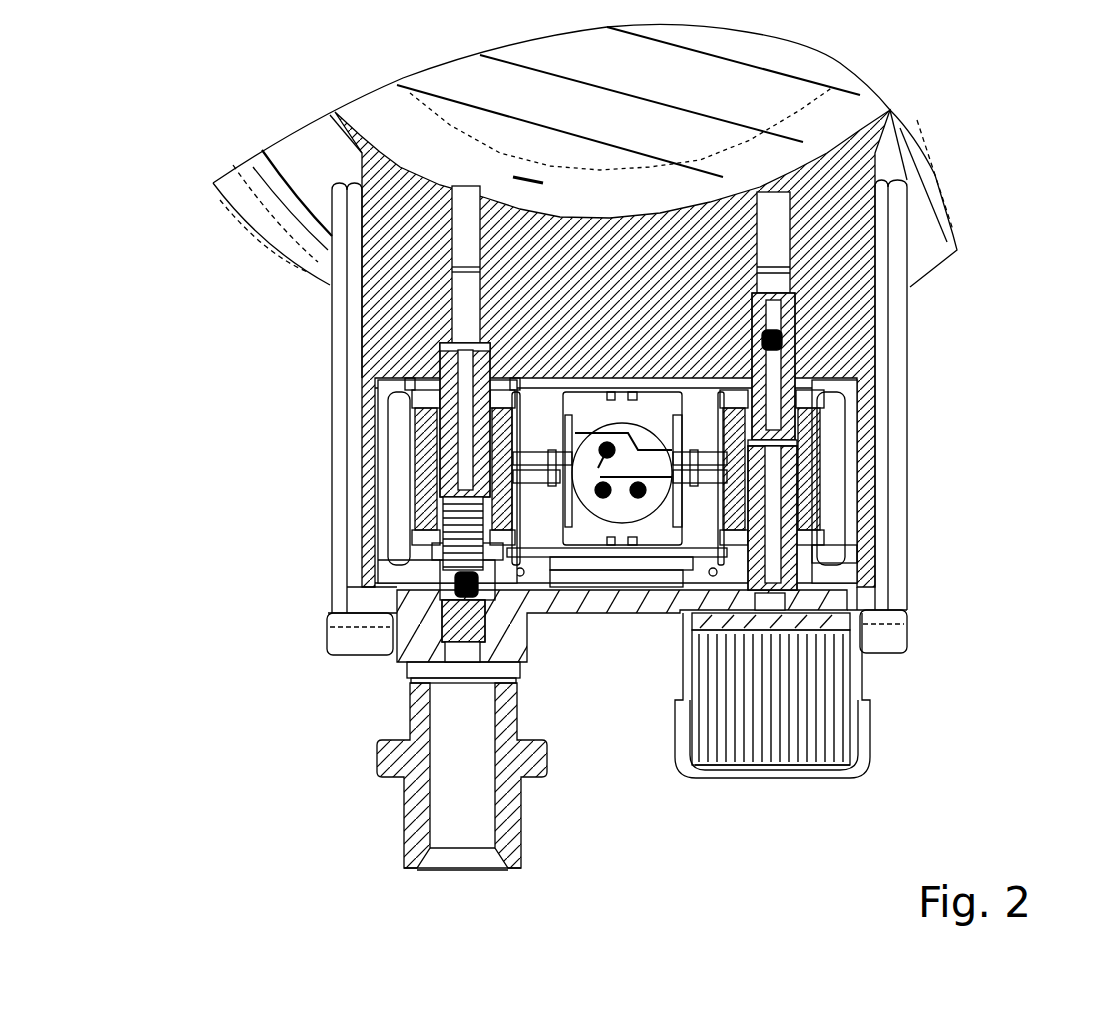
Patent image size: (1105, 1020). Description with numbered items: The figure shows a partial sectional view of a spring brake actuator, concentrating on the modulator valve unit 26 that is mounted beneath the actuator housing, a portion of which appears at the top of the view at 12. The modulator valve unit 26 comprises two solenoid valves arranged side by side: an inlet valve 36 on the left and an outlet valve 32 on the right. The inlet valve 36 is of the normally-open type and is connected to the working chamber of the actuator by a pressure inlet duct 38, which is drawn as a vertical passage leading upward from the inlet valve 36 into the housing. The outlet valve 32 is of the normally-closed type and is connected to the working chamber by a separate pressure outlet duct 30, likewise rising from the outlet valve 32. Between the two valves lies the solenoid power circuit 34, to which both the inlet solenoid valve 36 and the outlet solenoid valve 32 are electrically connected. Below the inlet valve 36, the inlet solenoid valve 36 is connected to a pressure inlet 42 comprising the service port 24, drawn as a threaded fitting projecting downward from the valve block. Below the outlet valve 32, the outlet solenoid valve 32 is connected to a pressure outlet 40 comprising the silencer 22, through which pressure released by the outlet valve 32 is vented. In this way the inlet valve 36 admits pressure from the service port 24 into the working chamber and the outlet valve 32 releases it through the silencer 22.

The cap 12 is at (706, 94).
The silencer 22 is at (860, 767).
The service port 24 is at (404, 835).
The modulator valve unit 26 is at (260, 361).
The pressure outlet duct 30 is at (775, 217).
The outlet valve 32 is at (820, 493).
The solenoid power circuit 34 is at (607, 557).
The inlet valve 36 is at (432, 492).
The pressure inlet duct 38 is at (468, 238).
The pressure outlet 40 is at (766, 814).
The pressure inlet 42 is at (472, 888).